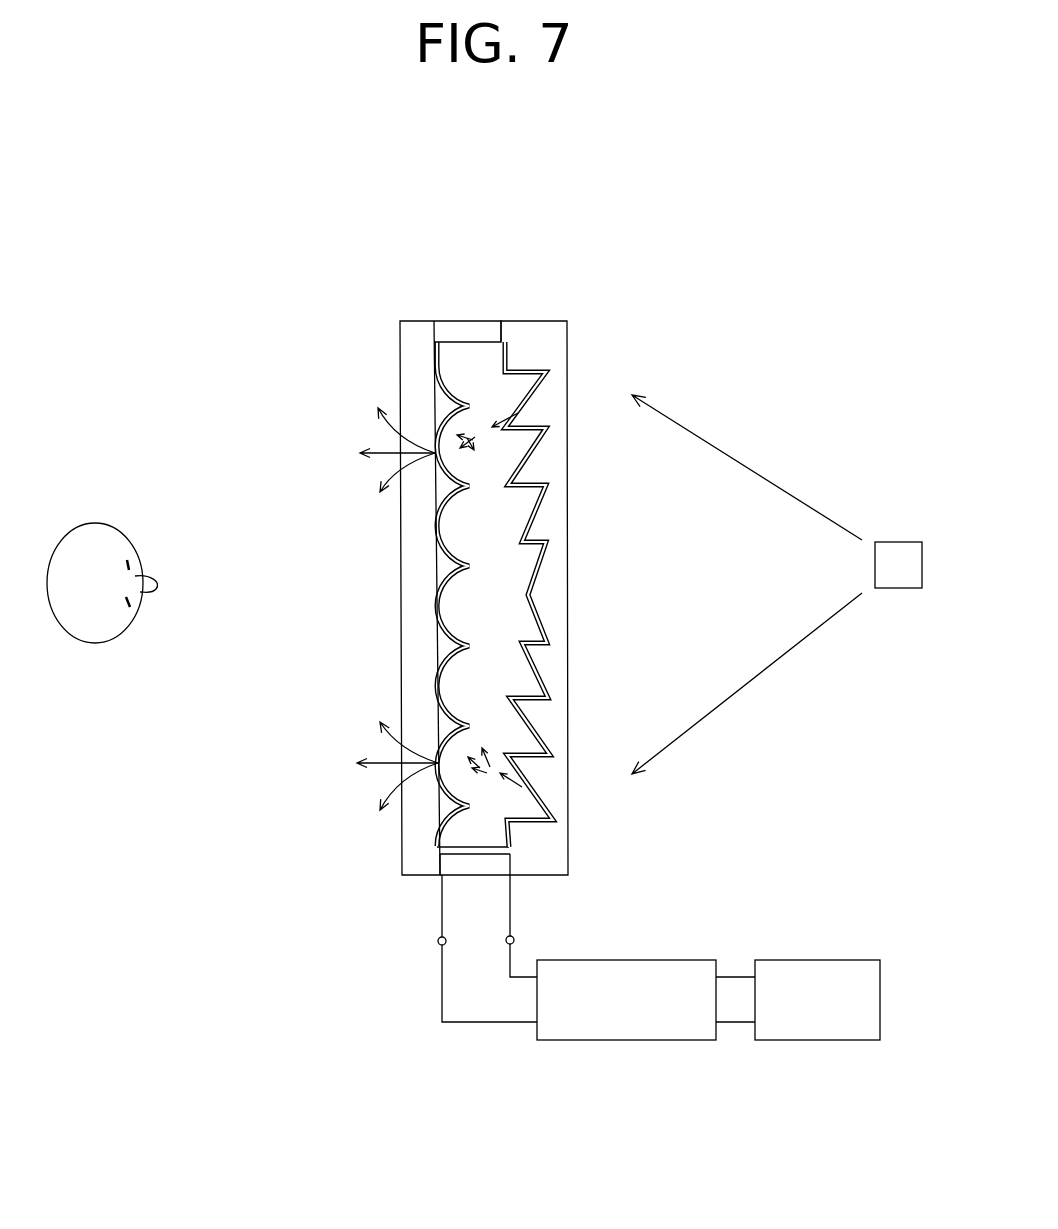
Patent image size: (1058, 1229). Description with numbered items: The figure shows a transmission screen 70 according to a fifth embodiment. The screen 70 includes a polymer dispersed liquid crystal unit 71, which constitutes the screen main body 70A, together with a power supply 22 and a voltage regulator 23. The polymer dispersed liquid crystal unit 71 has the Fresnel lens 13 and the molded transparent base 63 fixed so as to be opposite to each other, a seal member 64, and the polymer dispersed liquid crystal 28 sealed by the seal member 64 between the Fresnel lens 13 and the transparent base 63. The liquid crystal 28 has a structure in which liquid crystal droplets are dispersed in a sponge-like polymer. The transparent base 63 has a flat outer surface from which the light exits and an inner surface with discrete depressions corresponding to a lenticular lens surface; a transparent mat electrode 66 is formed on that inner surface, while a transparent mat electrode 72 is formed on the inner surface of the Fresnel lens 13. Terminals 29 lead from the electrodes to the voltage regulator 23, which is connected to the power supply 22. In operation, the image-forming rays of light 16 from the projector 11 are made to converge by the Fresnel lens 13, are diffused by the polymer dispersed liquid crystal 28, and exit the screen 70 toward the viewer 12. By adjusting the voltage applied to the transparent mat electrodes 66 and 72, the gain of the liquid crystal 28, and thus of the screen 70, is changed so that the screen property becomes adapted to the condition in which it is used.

The transmission screen 70 is at (643, 172).
The polymer dispersed liquid crystal unit 71 is at (580, 245).
The screen main body 70A is at (541, 211).
The molded transparent base 63 is at (410, 352).
The seal member 64 is at (466, 321).
The transparent mat electrode 66 is at (442, 603).
The Fresnel lens 13 is at (540, 318).
The transparent mat electrode 72 is at (545, 500).
The polymer dispersed liquid crystal 28 is at (515, 613).
The rays of light 16 is at (750, 470).
The projector 11 is at (898, 588).
The viewer 12 is at (113, 640).
The terminals 29 is at (438, 941).
The voltage regulator 23 is at (635, 960).
The power supply 22 is at (822, 960).